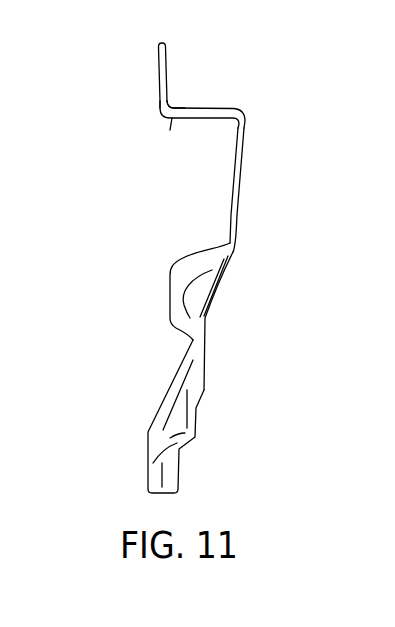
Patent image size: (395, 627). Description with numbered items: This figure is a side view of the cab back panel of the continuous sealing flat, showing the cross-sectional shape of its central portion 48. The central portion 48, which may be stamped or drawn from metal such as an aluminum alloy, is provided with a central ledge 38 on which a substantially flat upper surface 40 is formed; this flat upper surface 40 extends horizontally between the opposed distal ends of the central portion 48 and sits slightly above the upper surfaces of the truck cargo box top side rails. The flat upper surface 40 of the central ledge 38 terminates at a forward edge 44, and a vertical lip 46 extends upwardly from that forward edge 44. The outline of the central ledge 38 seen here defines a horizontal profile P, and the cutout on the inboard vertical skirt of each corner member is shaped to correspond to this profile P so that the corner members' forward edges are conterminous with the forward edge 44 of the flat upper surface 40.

The central ledge 38 is at (241, 148).
The flat upper surface 40 is at (190, 111).
The forward edge 44 is at (172, 118).
The vertical lip 46 is at (158, 68).
The central portion 48 is at (200, 287).
The horizontal profile P is at (211, 87).